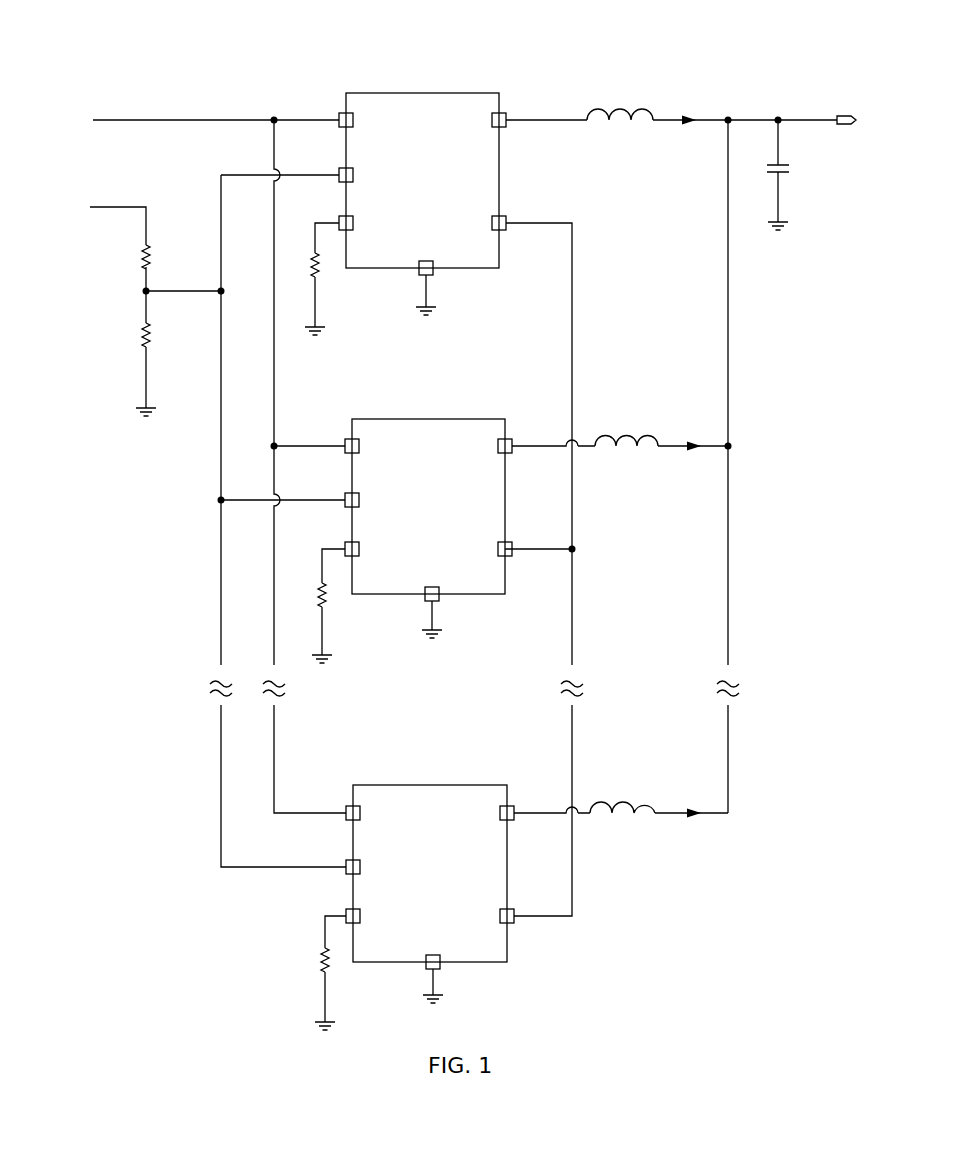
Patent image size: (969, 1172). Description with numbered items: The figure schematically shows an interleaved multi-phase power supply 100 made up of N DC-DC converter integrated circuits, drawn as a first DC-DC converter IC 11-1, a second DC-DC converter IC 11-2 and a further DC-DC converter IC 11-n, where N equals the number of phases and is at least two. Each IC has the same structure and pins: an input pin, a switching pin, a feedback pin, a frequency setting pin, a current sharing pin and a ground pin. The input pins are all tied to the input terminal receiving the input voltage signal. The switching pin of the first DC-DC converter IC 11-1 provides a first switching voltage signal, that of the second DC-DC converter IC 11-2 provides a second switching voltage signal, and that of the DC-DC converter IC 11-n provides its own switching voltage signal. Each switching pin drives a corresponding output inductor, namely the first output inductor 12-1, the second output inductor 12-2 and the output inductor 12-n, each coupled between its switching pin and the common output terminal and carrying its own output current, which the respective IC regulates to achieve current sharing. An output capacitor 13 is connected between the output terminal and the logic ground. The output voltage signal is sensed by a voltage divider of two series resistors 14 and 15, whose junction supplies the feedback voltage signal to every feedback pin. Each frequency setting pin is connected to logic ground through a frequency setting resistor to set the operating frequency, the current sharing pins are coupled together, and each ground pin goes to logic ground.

The interleaved multi-phase power supply 100 is at (818, 42).
The first DC-DC converter IC 11-1 is at (422, 93).
The second DC-DC converter IC 11-2 is at (428, 419).
The DC-DC converter IC 11-n is at (418, 785).
The first output inductor 12-1 is at (645, 88).
The second output inductor 12-2 is at (632, 428).
The output inductor 12-n is at (645, 782).
The output capacitor 13 is at (795, 180).
The resistor 14 is at (162, 246).
The resistor 15 is at (162, 335).